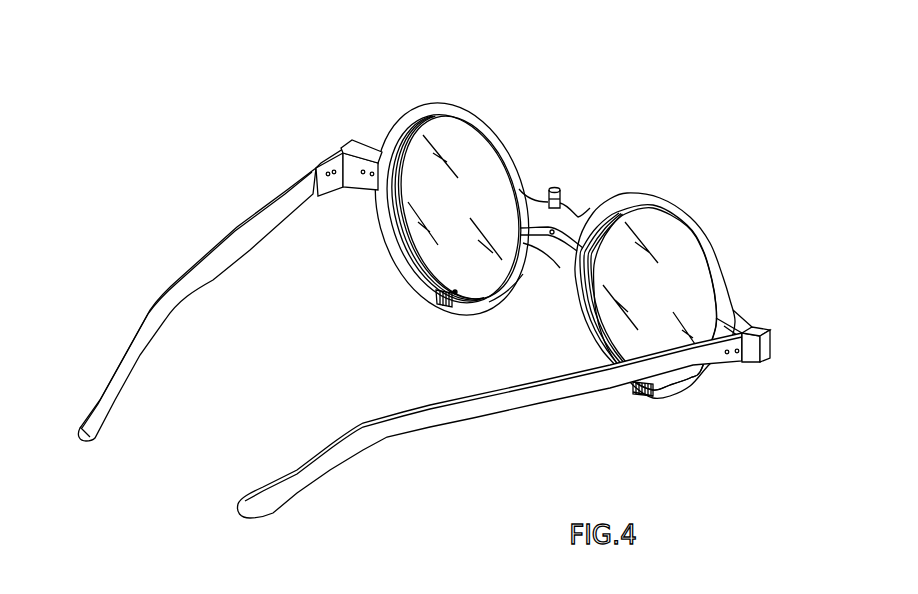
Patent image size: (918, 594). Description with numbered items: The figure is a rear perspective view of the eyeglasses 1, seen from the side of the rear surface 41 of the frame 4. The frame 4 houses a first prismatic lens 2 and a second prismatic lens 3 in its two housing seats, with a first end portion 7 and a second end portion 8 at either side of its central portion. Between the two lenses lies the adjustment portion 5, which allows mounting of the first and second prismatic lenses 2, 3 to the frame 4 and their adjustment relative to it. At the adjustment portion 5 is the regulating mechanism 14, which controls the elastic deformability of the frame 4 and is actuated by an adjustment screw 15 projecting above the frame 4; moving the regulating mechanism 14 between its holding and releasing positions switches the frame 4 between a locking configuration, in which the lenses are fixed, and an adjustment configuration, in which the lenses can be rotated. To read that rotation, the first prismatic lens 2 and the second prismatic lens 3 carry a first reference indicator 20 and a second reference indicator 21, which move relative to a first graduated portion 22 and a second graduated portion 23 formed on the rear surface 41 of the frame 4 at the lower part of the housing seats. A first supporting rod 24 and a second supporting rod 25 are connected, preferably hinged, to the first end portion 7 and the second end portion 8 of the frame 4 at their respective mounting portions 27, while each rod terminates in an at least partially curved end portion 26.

The eyeglasses 1 is at (163, 55).
The first prismatic lens 2 is at (662, 255).
The second prismatic lens 3 is at (459, 157).
The frame 4 is at (742, 218).
The adjustment portion 5 is at (567, 166).
The first end portion 7 is at (766, 379).
The second end portion 8 is at (333, 131).
The regulating mechanism 14 is at (545, 183).
The adjustment screw 15 is at (565, 200).
The first reference indicator 20 is at (648, 393).
The second reference indicator 21 is at (455, 300).
The first graduated portion 22 is at (632, 400).
The second graduated portion 23 is at (430, 310).
The first supporting rod 24 is at (443, 418).
The second supporting rod 25 is at (238, 243).
The end portion 26 is at (128, 404).
The mounting portion 27 is at (336, 202).
The rear surface 41 is at (489, 310).